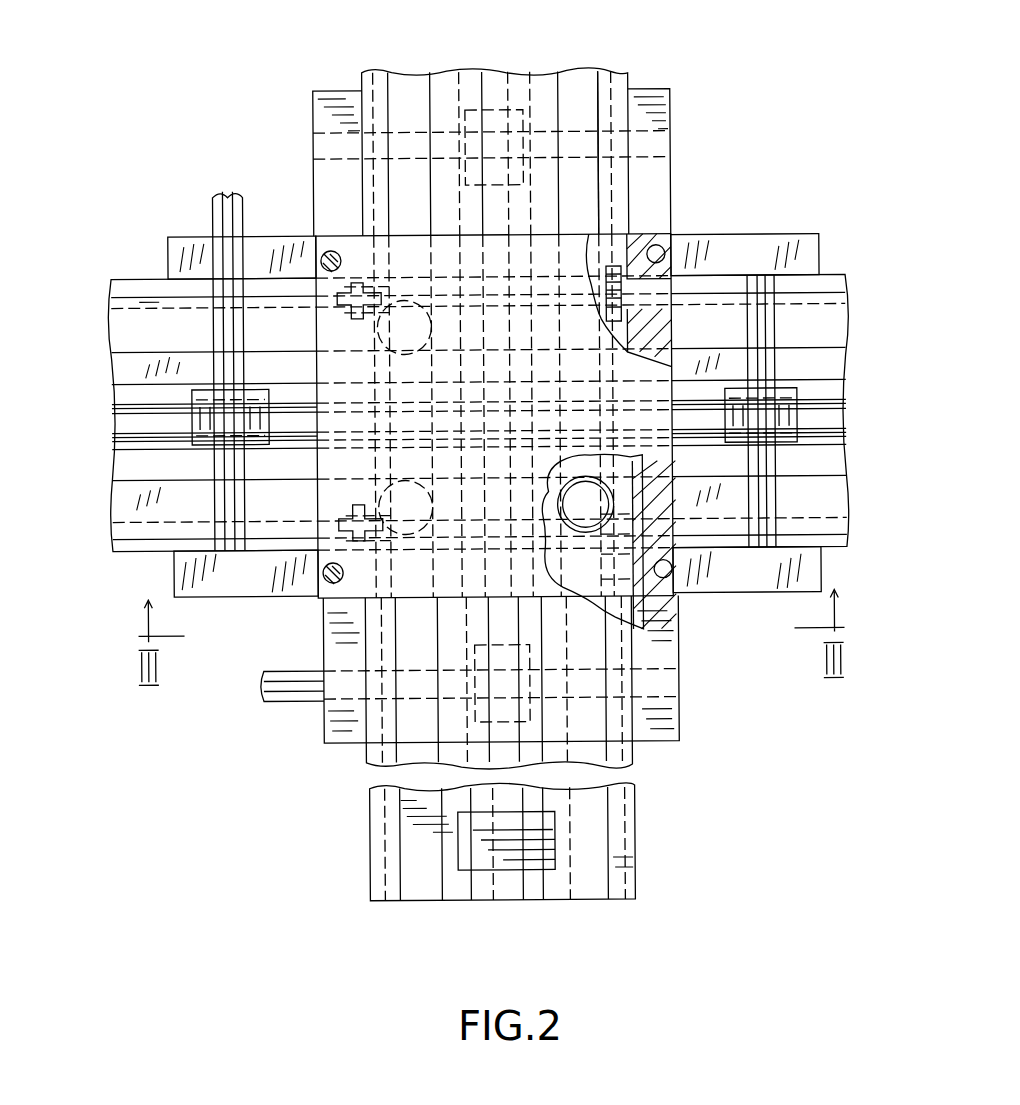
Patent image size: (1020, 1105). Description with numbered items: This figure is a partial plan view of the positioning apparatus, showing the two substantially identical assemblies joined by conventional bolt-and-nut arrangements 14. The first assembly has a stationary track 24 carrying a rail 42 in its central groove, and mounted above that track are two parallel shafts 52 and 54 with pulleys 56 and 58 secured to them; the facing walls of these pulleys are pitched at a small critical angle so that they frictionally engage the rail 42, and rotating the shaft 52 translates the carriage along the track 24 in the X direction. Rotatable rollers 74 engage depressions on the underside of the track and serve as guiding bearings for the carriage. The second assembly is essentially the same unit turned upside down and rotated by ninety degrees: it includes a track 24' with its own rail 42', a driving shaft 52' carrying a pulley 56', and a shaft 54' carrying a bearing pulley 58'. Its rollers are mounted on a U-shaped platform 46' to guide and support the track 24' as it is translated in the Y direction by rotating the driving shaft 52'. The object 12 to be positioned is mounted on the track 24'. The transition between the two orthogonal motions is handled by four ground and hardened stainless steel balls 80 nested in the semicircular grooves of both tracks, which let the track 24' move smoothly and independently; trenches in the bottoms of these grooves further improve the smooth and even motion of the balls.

The object 12 is at (498, 862).
The bolt-and-nut arrangements 14 is at (326, 253).
The track 24 is at (775, 432).
The track 24' is at (466, 841).
The rail 42 is at (212, 434).
The rail 42' is at (529, 694).
The U-shaped platform 46' is at (335, 412).
The shaft 52 is at (208, 369).
The driving shaft 52' is at (293, 715).
The shaft 54 is at (793, 410).
The shaft 54' is at (673, 152).
The pulley 56 is at (221, 382).
The pulley 56' is at (481, 670).
The pulley 58 is at (782, 393).
The bearing pulley 58' is at (494, 131).
The rotatable rollers 74 is at (614, 268).
The steel balls 80 is at (580, 333).